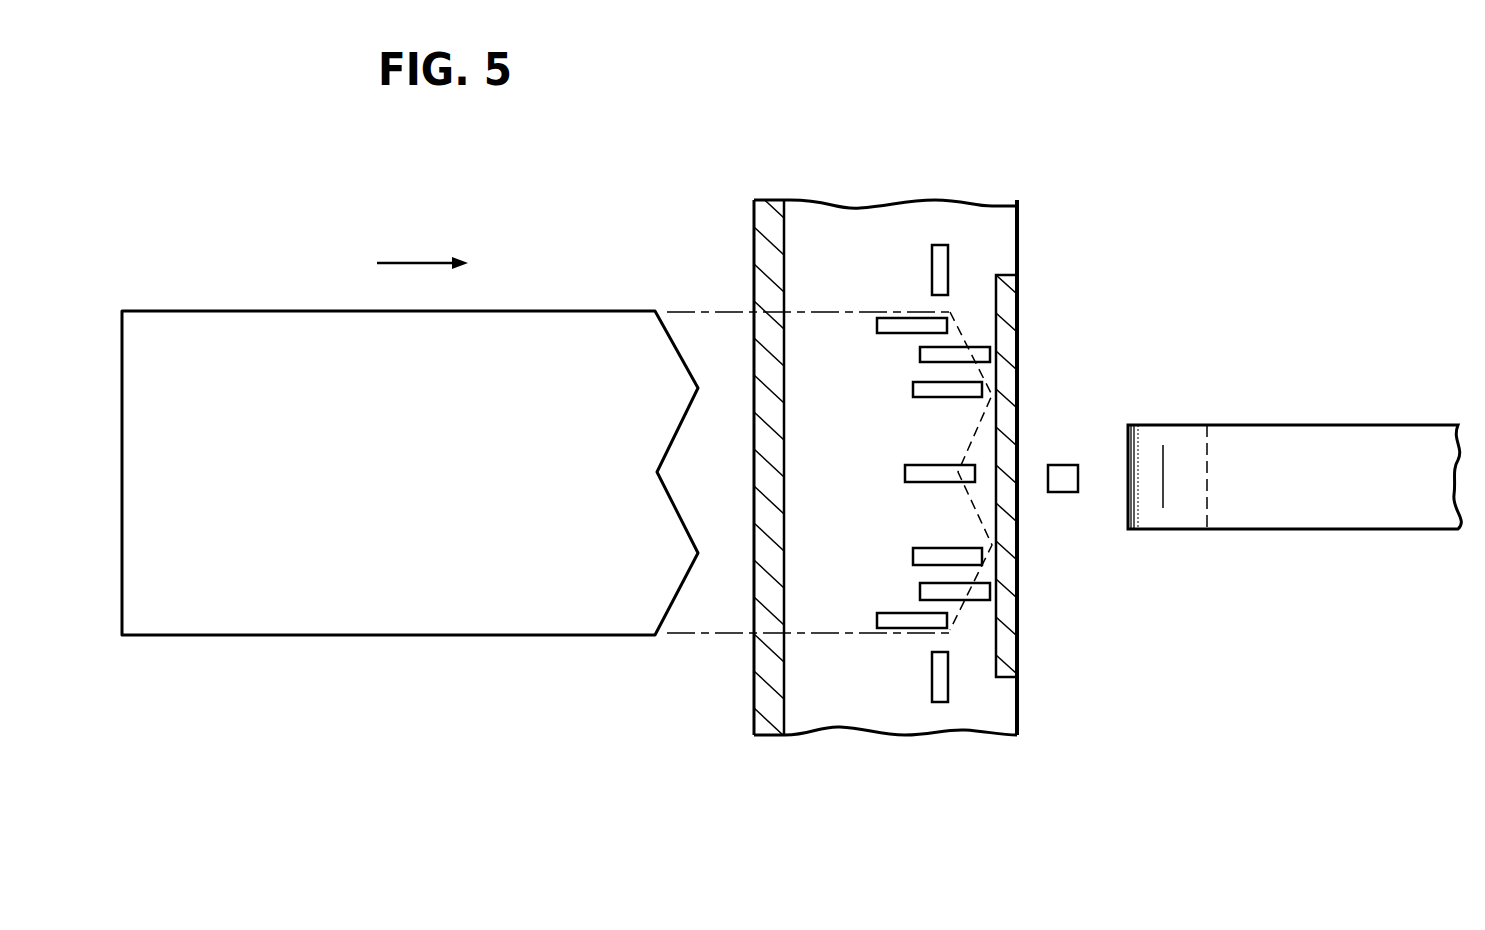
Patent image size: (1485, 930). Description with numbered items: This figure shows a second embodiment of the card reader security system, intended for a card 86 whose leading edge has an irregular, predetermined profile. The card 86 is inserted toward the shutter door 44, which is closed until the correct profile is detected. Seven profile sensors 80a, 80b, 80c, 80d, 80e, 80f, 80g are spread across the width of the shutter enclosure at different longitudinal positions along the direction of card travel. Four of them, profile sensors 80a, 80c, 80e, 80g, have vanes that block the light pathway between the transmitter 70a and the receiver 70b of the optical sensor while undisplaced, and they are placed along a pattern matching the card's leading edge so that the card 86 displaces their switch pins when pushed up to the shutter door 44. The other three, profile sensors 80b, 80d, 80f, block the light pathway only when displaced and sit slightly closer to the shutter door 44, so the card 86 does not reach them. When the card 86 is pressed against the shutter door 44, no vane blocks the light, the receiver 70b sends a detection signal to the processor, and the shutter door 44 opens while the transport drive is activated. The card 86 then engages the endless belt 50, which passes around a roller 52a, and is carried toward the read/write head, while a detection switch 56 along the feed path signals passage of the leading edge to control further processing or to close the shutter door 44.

The card 86 is at (232, 323).
The shutter door 44 is at (1008, 312).
The transmitter 70a is at (932, 688).
The receiver 70b is at (932, 265).
The profile sensor 80a is at (877, 328).
The profile sensor 80b is at (920, 358).
The profile sensor 80c is at (913, 397).
The profile sensor 80d is at (905, 473).
The profile sensor 80e is at (913, 548).
The profile sensor 80f is at (920, 590).
The profile sensor 80g is at (877, 618).
The detection switch 56 is at (1060, 465).
The endless belt 50 is at (1315, 425).
The roller 52a is at (1207, 488).